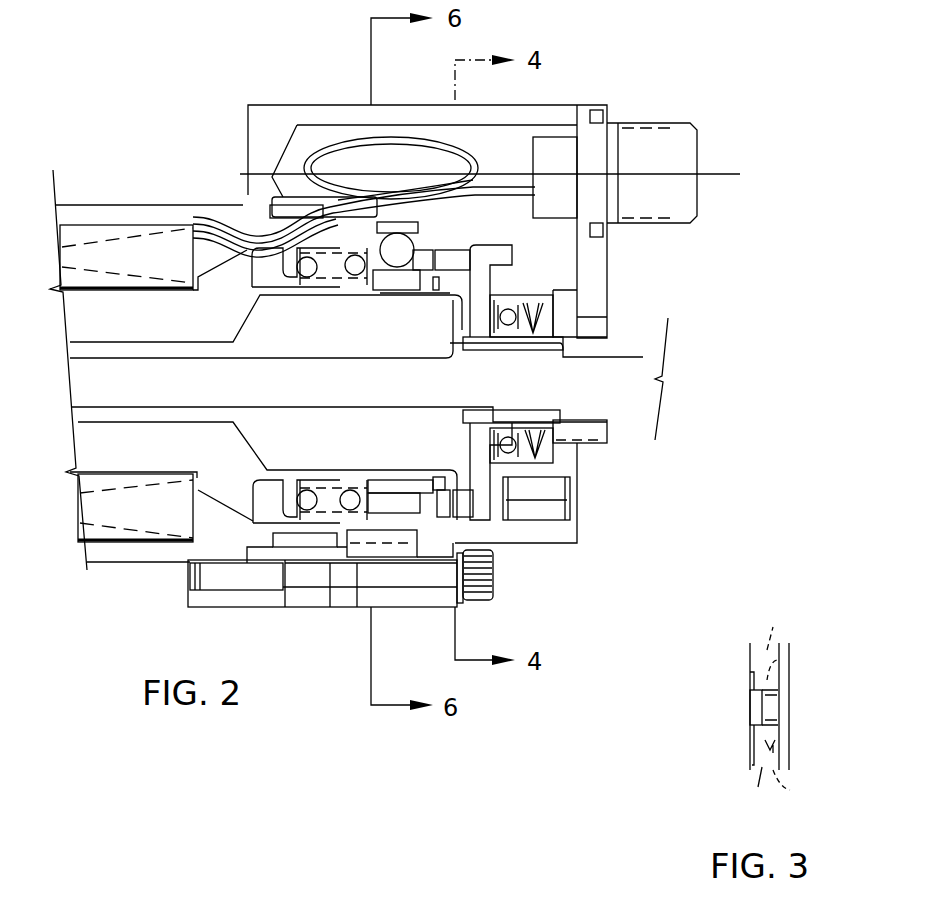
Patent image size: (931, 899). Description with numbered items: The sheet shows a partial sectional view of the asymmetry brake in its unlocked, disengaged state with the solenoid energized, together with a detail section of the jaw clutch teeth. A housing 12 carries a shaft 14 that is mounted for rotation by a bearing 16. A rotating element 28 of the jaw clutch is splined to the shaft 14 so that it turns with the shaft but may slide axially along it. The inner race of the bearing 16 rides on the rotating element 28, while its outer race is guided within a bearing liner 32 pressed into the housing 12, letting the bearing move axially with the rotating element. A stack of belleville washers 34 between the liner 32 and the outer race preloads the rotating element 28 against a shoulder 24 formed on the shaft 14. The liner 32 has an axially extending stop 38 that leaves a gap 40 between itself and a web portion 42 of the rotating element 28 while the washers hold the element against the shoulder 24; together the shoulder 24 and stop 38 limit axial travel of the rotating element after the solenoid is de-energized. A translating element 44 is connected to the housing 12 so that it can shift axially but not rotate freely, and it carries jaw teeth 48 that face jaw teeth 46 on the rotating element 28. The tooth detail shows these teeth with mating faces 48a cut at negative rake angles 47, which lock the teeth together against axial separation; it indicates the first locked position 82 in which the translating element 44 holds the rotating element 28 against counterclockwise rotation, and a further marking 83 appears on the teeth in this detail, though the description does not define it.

In FIG. 2, the housing 12 is at (312, 106).
In FIG. 2, the web portion 42 is at (483, 253).
In FIG. 2, the gap 40 is at (497, 255).
In FIG. 2, the stop 38 is at (503, 250).
In FIG. 2, the bearing liner 32 is at (558, 292).
In FIG. 2, the shoulder 24 is at (450, 338).
In FIG. 2, the shaft 14 is at (643, 363).
In FIG. 2, the jaw teeth 46 is at (470, 487).
In FIG. 3, the jaw teeth 46 is at (775, 704).
In FIG. 2, the jaw teeth 48 is at (450, 477).
In FIG. 3, the jaw teeth 48 is at (777, 617).
In FIG. 2, the rotating element 28 is at (485, 505).
In FIG. 2, the belleville washers 34 is at (520, 478).
In FIG. 2, the bearing 16 is at (578, 518).
In FIG. 2, the translating element 44 is at (430, 505).
In FIG. 3, the mating face 48a is at (750, 672).
In FIG. 3, the negative rake angle 47 is at (755, 728).
In FIG. 3, the slot 83 is at (813, 676).
In FIG. 3, the first locked position 82 is at (750, 797).